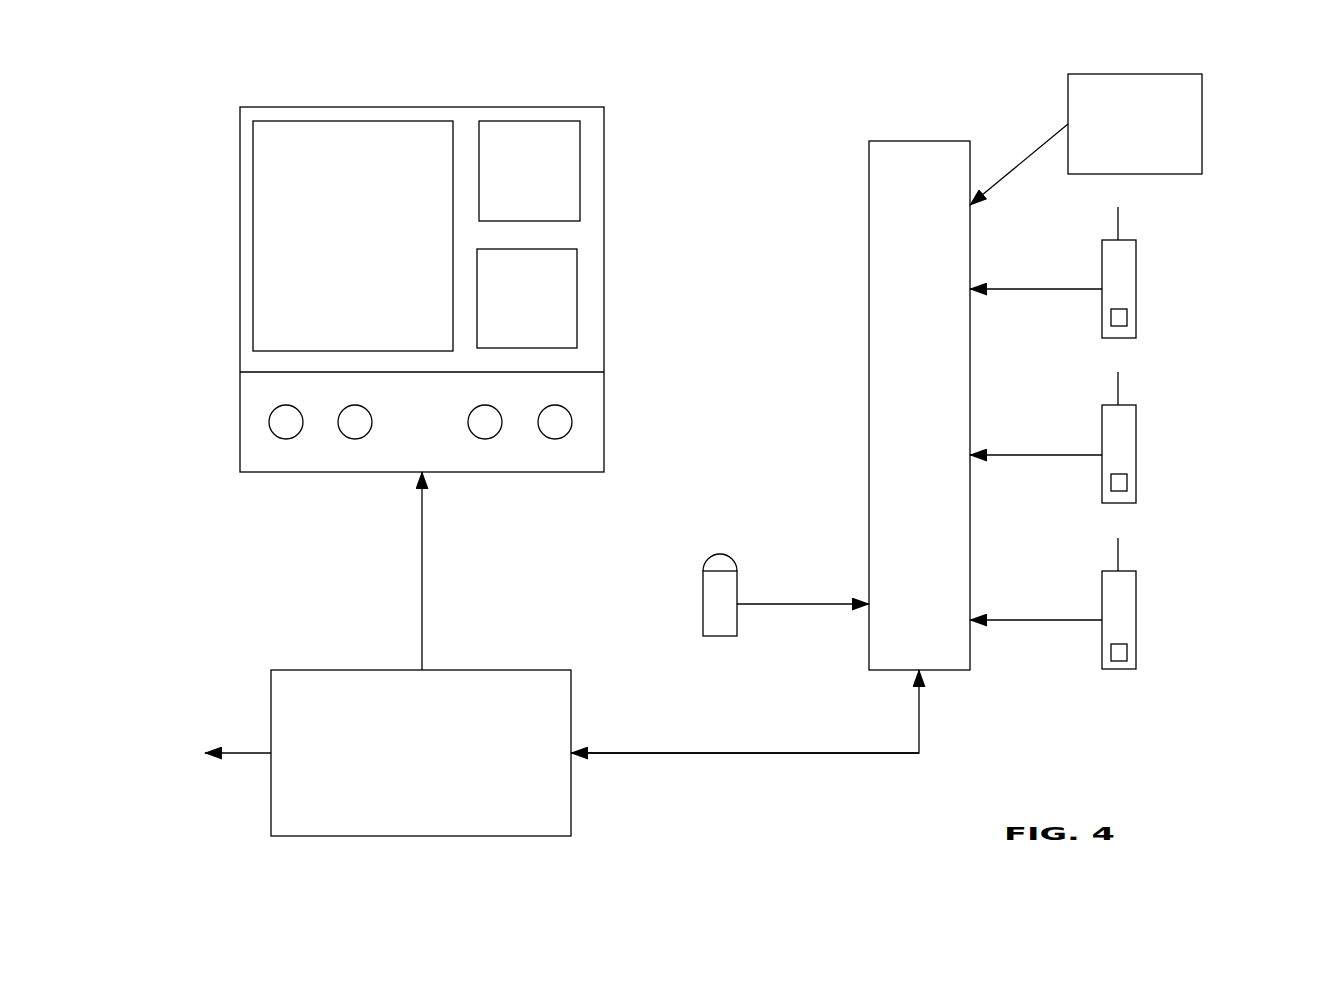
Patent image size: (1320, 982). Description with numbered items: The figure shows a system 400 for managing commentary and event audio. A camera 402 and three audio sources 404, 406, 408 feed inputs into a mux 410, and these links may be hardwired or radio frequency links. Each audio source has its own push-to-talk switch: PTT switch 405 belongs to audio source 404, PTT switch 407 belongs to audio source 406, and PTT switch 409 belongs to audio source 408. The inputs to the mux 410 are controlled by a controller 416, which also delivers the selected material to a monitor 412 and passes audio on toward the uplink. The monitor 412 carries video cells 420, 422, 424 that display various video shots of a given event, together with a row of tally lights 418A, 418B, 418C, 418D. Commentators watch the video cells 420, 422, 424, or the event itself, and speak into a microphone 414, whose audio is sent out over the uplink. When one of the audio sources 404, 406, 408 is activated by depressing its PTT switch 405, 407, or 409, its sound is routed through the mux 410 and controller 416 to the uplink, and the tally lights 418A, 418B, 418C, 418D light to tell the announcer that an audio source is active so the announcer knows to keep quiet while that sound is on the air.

The system 400 is at (702, 74).
The camera 402 is at (1202, 124).
The audio source 404 is at (1154, 277).
The PTT switch 405 is at (1119, 317).
The audio source 406 is at (1155, 443).
The PTT switch 407 is at (1119, 483).
The audio source 408 is at (1154, 610).
The PTT switch 409 is at (1119, 653).
The mux 410 is at (868, 300).
The monitor 412 is at (463, 295).
The microphone 414 is at (737, 583).
The controller 416 is at (493, 670).
The tally light 418A is at (285, 424).
The tally light 418B is at (355, 422).
The tally light 418C is at (486, 422).
The tally light 418D is at (556, 422).
The video cell 420 is at (291, 180).
The video cell 422 is at (532, 153).
The video cell 424 is at (549, 292).